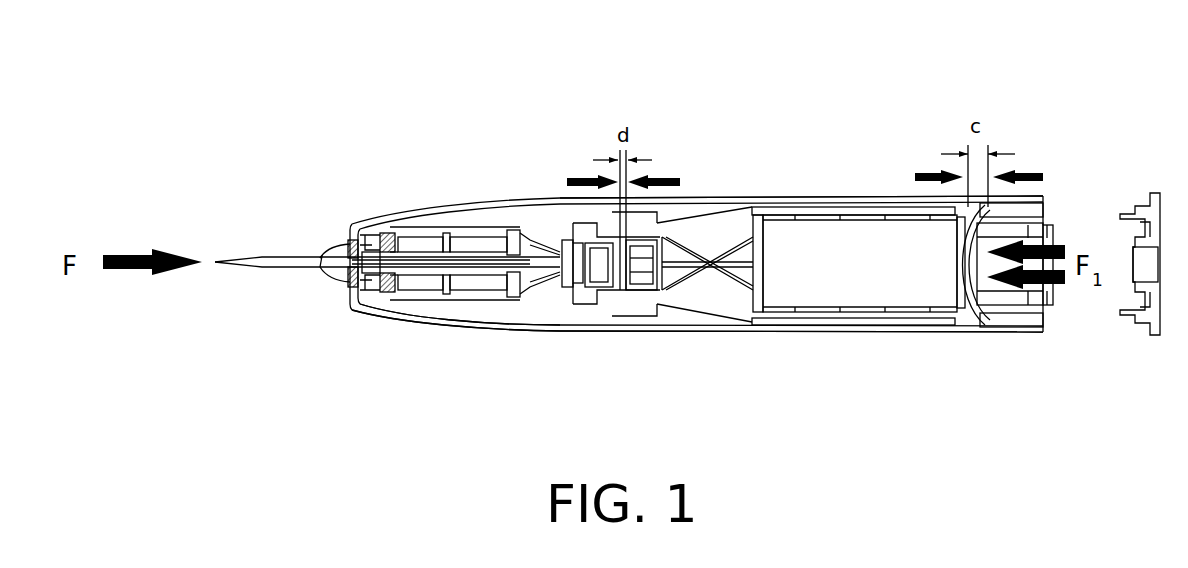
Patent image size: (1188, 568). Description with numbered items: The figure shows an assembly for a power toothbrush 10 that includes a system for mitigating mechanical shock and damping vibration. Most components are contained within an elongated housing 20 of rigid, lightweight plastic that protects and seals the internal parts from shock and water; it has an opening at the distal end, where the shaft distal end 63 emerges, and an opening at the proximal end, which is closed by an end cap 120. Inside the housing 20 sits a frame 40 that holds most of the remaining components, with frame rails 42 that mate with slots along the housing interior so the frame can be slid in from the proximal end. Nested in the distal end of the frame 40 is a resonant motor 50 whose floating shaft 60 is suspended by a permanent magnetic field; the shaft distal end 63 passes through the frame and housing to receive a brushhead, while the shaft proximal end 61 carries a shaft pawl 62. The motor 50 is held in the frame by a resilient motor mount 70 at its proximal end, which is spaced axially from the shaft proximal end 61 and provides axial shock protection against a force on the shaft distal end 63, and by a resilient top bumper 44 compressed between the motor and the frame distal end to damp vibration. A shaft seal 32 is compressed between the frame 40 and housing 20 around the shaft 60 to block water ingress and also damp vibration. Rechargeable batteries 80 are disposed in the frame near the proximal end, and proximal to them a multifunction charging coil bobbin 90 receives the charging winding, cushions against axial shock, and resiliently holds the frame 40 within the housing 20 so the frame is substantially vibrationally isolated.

The power toothbrush 10 is at (272, 98).
The housing 20 is at (428, 212).
The shaft seal 32 is at (348, 250).
The frame 40 is at (910, 331).
The frame rails 42 is at (781, 325).
The top bumper 44 is at (385, 298).
The motor 50 is at (487, 245).
The floating shaft 60 is at (357, 233).
The shaft proximal end 61 is at (620, 278).
The shaft pawl 62 is at (598, 268).
The shaft distal end 63 is at (218, 268).
The motor mount 70 is at (640, 266).
The rechargeable batteries 80 is at (872, 278).
The charging coil bobbin 90 is at (1017, 308).
The end cap 120 is at (1152, 332).